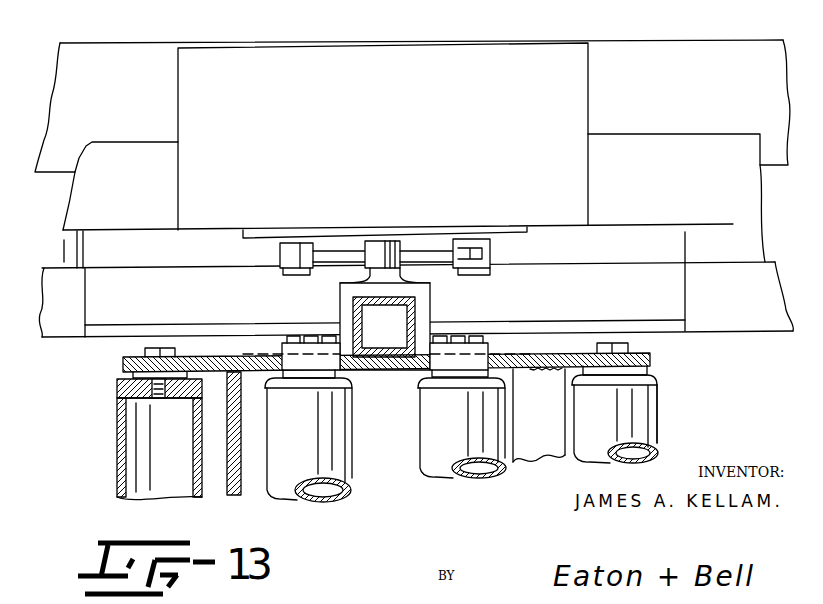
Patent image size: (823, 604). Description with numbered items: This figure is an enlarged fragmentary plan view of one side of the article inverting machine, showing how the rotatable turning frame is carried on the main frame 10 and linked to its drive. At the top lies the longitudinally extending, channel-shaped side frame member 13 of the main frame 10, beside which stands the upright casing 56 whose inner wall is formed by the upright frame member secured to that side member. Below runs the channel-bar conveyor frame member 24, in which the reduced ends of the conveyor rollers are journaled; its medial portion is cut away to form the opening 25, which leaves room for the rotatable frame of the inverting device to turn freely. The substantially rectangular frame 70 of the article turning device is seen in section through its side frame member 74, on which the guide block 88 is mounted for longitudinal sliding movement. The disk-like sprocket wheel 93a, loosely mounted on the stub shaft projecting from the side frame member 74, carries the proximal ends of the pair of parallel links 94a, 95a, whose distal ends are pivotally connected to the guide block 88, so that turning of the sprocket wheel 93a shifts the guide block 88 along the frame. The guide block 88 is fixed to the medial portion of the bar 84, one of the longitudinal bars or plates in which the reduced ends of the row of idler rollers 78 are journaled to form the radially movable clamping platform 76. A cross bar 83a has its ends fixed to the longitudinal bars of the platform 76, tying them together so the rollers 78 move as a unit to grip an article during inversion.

The main frame 10 is at (692, 36).
The side frame member 13 is at (110, 53).
The upright casing 56 is at (582, 90).
The conveyor frame member 24 is at (73, 331).
The opening 25 is at (684, 322).
The sprocket wheel 93a is at (303, 235).
The parallel link 94a is at (342, 253).
The parallel link 95a is at (422, 252).
The guide block 88 is at (345, 308).
The rectangular frame 70 is at (430, 306).
The side frame member 74 is at (413, 319).
The bar 84 is at (531, 357).
The idler roller 78 is at (117, 452).
The clamping platform 76 is at (658, 405).
The cross bar 83a is at (240, 496).